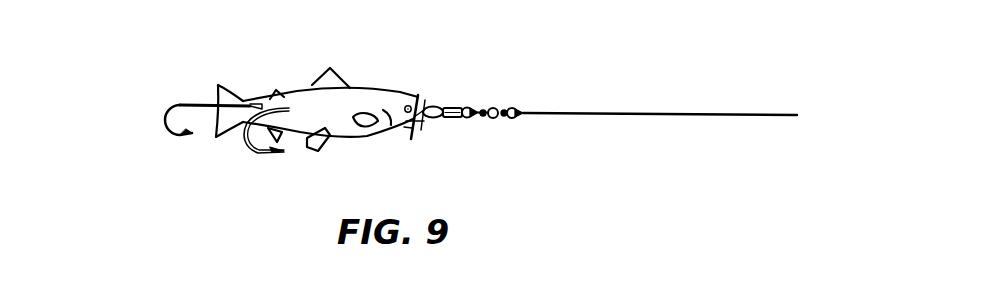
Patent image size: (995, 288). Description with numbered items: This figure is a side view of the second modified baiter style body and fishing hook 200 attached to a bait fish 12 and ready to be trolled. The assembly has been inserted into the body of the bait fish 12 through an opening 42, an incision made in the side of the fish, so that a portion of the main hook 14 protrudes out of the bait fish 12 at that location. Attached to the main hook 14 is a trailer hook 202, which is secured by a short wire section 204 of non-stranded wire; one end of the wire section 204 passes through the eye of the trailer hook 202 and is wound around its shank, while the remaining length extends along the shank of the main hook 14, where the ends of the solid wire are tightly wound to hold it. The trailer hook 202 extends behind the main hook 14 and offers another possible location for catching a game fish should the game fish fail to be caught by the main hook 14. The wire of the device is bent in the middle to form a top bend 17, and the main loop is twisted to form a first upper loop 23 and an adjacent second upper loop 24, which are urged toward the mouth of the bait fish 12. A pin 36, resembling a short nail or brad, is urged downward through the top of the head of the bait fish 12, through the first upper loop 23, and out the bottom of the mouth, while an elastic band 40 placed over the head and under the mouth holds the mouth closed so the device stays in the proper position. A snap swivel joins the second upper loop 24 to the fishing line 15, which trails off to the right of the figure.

The bait fish 12 is at (363, 85).
The main hook 14 is at (265, 159).
The fishing line 15 is at (642, 116).
The top bend 17 is at (496, 110).
The first upper loop 23 is at (443, 107).
The second upper loop 24 is at (408, 126).
The pin 36 is at (417, 92).
The elastic band 40 is at (421, 116).
The opening 42 is at (280, 110).
The second modified baiter style body and fishing hook 200 is at (159, 138).
The trailer hook 202 is at (176, 136).
The wire section 204 is at (258, 116).